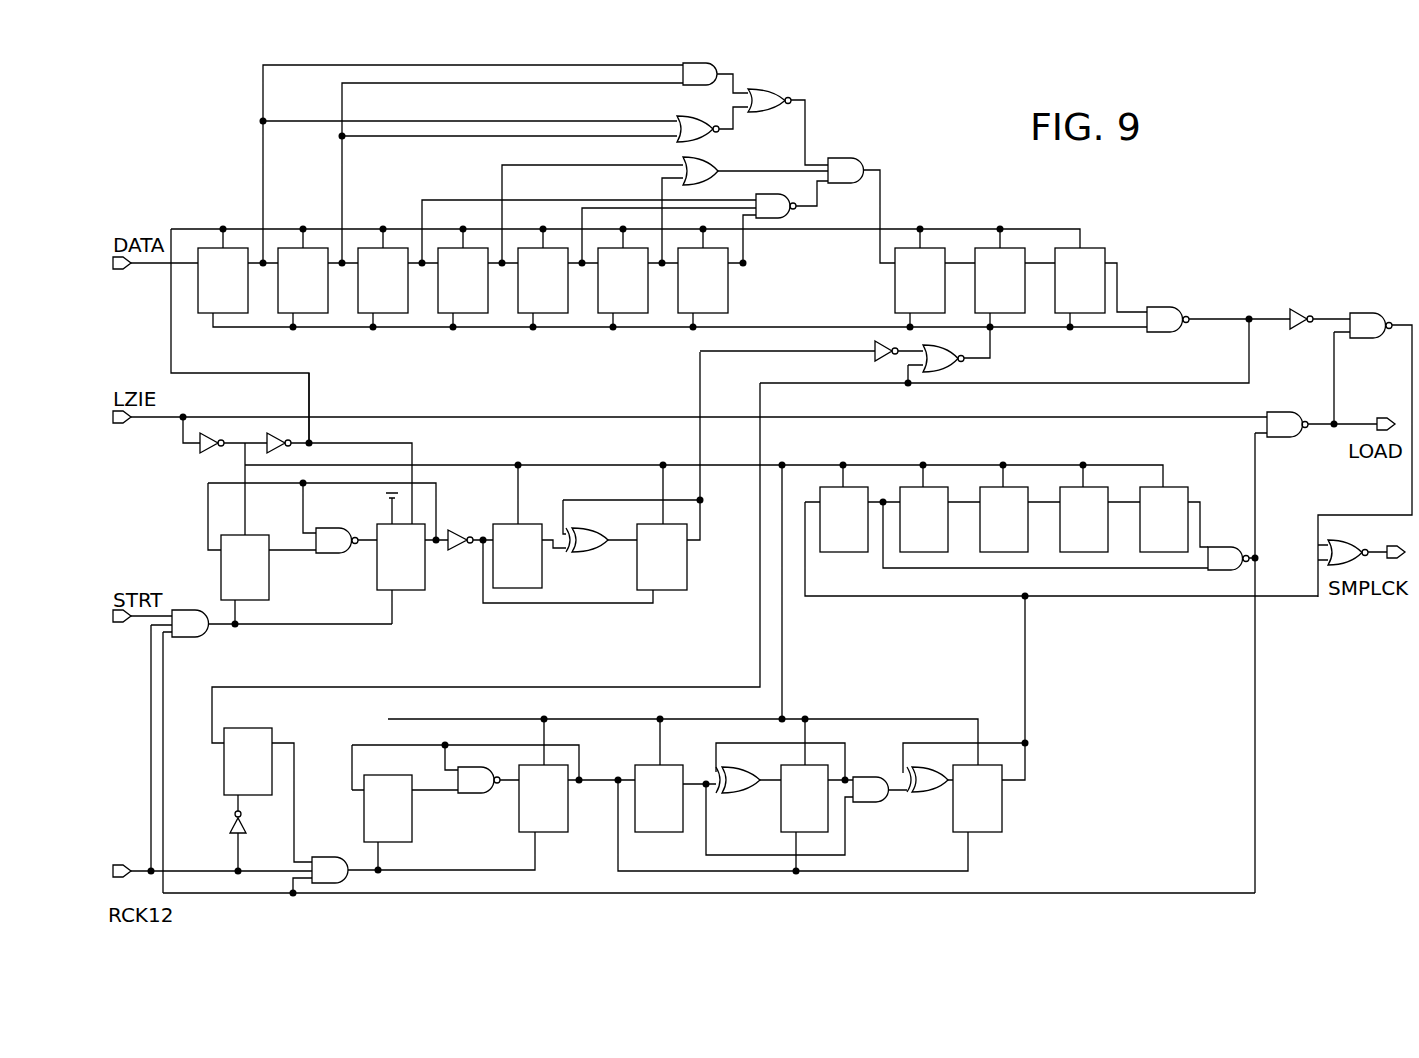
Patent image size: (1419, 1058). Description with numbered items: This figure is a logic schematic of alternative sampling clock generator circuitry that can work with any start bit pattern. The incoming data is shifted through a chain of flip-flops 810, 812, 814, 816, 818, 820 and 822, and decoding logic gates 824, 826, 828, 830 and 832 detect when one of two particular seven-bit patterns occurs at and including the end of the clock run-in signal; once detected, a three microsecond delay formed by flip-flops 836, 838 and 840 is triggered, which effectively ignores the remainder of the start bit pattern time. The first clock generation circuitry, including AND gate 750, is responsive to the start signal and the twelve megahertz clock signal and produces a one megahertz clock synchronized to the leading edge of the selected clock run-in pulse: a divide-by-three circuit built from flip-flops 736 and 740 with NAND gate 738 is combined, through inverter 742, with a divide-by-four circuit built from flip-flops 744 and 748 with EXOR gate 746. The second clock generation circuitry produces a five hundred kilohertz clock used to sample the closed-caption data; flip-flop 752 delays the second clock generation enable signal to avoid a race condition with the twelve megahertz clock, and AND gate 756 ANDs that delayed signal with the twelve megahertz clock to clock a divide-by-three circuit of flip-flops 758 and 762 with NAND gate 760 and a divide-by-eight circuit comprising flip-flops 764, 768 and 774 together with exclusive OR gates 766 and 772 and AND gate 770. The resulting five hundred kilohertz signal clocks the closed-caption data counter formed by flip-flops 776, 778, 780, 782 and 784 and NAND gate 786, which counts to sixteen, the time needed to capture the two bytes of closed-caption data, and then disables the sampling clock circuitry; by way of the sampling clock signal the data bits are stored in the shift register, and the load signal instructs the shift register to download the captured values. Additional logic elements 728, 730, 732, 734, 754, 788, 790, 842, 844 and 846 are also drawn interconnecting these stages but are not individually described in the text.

The inverter 728 is at (1300, 312).
The NAND gate 730 is at (1352, 315).
The inverter 732 is at (208, 453).
The inverter 734 is at (272, 435).
The flip-flop 736 is at (250, 535).
The NAND gate 738 is at (334, 530).
The flip-flop 740 is at (377, 562).
The inverter 742 is at (456, 530).
The flip-flop 744 is at (536, 524).
The EXOR gate 746 is at (580, 552).
The flip-flop 748 is at (687, 570).
The AND gate 750 is at (206, 636).
The flip-flop 752 is at (252, 728).
The inverter 754 is at (232, 818).
The AND gate 756 is at (325, 857).
The flip-flop 758 is at (412, 842).
The NAND gate 760 is at (468, 795).
The flip-flop 762 is at (557, 832).
The flip-flop 764 is at (647, 832).
The exclusive OR gate 766 is at (745, 795).
The flip-flop 768 is at (790, 765).
The AND gate 770 is at (870, 803).
The exclusive OR gate 772 is at (935, 768).
The flip-flop 774 is at (1002, 812).
The flip-flop 776 is at (830, 487).
The flip-flop 778 is at (910, 487).
The flip-flop 780 is at (990, 487).
The flip-flop 782 is at (1070, 487).
The flip-flop 784 is at (1150, 487).
The NAND gate 786 is at (1222, 547).
The NAND gate 788 is at (1290, 437).
The NOR gate 790 is at (1340, 548).
The flip-flop 810 is at (211, 320).
The flip-flop 812 is at (317, 320).
The flip-flop 814 is at (396, 322).
The flip-flop 816 is at (470, 322).
The flip-flop 818 is at (552, 322).
The flip-flop 820 is at (634, 322).
The flip-flop 822 is at (728, 290).
The logic gate 824 is at (718, 64).
The logic gate 826 is at (718, 136).
The logic gate 828 is at (718, 160).
The logic gate 830 is at (785, 92).
The logic gate 832 is at (794, 207).
The flip-flop 836 is at (932, 248).
The flip-flop 838 is at (1015, 248).
The flip-flop 840 is at (1100, 248).
The inverter 842 is at (872, 350).
The NOR gate 844 is at (950, 372).
The NAND gate 846 is at (1160, 310).